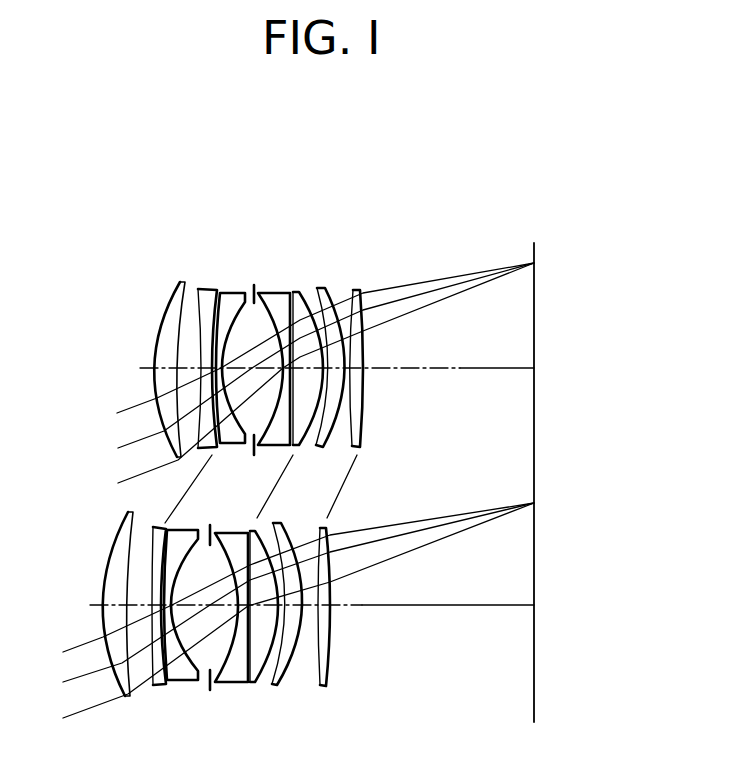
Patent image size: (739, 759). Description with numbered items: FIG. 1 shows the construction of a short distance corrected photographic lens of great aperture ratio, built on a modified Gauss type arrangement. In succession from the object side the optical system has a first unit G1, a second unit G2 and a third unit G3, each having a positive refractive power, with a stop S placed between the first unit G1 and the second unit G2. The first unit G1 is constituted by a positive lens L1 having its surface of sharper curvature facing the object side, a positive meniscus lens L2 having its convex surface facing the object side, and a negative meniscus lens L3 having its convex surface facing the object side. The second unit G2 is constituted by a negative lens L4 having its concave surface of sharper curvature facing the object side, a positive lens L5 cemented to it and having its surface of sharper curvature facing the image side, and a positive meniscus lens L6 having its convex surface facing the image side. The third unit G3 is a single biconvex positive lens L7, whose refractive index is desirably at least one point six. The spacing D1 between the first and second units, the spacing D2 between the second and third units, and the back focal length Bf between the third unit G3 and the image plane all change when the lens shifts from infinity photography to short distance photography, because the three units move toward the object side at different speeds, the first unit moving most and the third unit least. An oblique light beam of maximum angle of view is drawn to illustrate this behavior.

The first unit G1 is at (247, 232).
The second unit G2 is at (327, 232).
The third unit G3 is at (377, 232).
The positive lens L1 is at (180, 280).
The positive meniscus lens L2 is at (212, 287).
The negative meniscus lens L3 is at (235, 291).
The negative lens L4 is at (273, 292).
The positive lens L5 is at (293, 290).
The positive meniscus lens L6 is at (318, 287).
The positive lens L7 is at (360, 289).
The stop S is at (254, 303).
The spacing between the first and the second unit D1 is at (262, 373).
The spacing between the second and the third unit D2 is at (352, 373).
The back focal length Bf is at (449, 367).